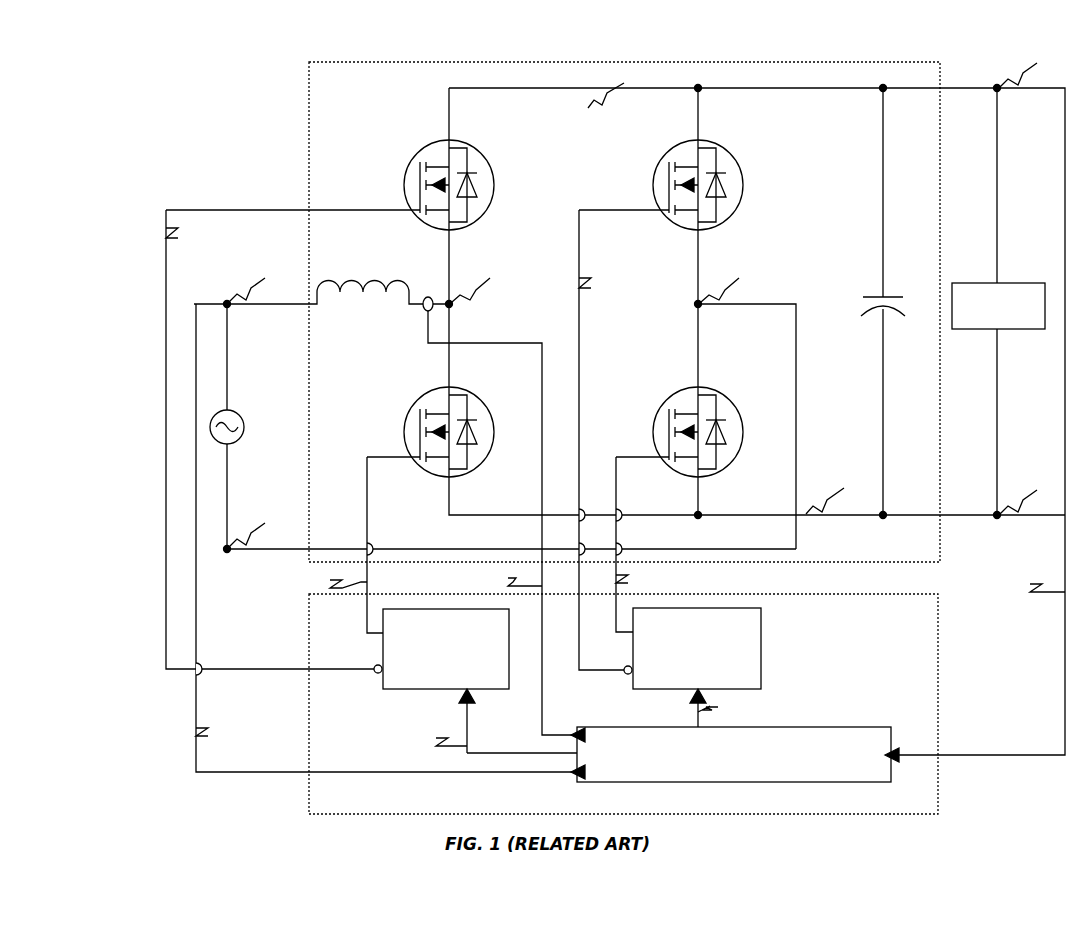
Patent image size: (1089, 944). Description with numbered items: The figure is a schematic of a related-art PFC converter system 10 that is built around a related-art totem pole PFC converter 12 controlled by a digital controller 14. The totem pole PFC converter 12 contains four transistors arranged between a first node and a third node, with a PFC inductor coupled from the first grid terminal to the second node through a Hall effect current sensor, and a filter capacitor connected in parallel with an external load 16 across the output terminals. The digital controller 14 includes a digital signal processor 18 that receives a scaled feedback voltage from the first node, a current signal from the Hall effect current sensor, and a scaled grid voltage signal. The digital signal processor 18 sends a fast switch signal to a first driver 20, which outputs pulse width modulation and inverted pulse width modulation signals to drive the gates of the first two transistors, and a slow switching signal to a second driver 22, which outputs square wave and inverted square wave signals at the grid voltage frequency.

The PFC converter system 10 is at (162, 52).
The totem pole PFC converter 12 is at (615, 404).
The digital controller 14 is at (623, 704).
The external load 16 is at (998, 301).
The digital signal processor 18 is at (734, 754).
The first driver 20 is at (446, 649).
The second driver 22 is at (697, 648).